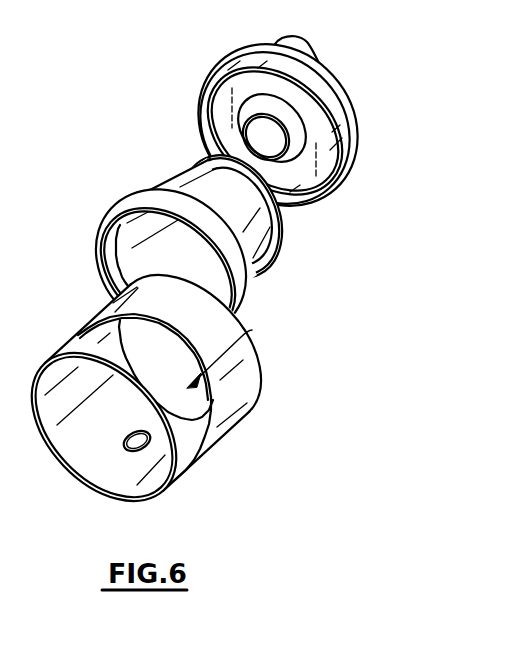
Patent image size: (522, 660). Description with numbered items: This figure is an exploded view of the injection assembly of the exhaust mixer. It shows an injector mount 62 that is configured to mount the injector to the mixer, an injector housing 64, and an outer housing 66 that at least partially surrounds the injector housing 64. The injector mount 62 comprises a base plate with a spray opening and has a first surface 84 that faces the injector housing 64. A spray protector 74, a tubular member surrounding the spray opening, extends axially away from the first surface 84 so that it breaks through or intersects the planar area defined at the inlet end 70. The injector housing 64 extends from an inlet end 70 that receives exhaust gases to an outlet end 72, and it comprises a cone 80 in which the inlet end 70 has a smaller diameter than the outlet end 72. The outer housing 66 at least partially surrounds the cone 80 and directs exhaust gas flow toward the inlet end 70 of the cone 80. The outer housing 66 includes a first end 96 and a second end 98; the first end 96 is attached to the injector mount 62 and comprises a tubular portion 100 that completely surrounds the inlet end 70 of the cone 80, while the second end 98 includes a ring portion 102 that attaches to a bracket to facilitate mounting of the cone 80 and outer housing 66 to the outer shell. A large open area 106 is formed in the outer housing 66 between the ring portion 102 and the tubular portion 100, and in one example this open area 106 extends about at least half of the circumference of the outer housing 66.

The injector mount 62 is at (328, 92).
The spray protector 74 is at (288, 143).
The first surface 84 is at (310, 170).
The inlet end 70 is at (283, 219).
The injector housing 64 is at (270, 243).
The cone 80 is at (190, 188).
The outlet end 72 is at (101, 267).
The outer housing 66 is at (219, 431).
The first end 96 is at (257, 372).
The tubular portion 100 is at (237, 380).
The ring portion 102 is at (180, 470).
The second end 98 is at (55, 449).
The open area 106 is at (242, 351).